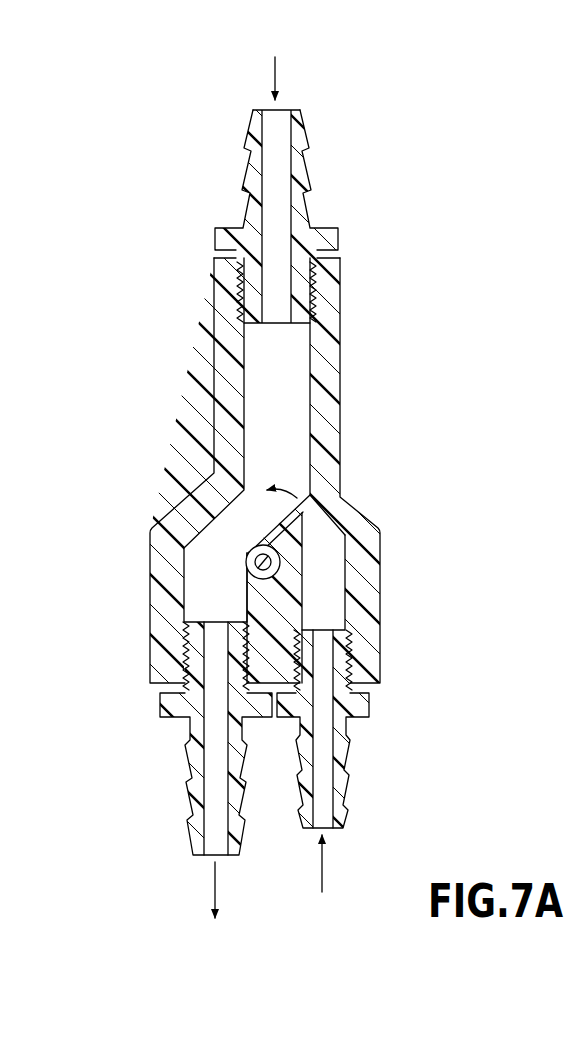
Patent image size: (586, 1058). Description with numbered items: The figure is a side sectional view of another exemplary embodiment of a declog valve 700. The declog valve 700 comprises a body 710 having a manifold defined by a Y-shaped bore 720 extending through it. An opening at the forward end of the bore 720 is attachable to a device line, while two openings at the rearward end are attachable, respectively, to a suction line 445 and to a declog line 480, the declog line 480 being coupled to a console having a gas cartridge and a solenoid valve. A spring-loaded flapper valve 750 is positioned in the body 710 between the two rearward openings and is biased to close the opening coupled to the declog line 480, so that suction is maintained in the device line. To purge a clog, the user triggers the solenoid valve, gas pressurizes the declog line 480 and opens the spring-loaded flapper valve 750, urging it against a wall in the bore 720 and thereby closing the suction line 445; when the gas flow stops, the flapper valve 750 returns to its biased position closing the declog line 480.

The declog valve 700 is at (72, 203).
The body 710 is at (340, 373).
The Y-shaped bore 720 is at (257, 380).
The spring-loaded flapper valve 750 is at (306, 497).
The suction line 445 is at (212, 880).
The declog line 480 is at (324, 876).